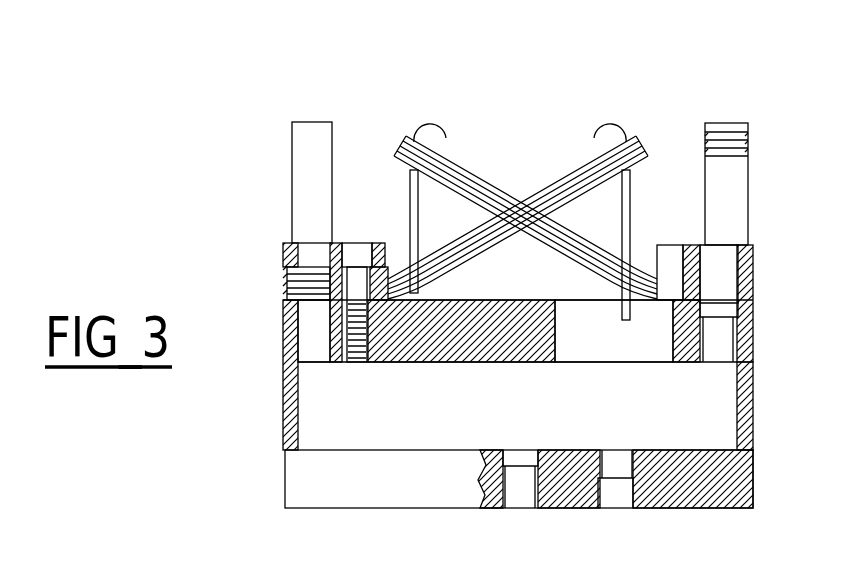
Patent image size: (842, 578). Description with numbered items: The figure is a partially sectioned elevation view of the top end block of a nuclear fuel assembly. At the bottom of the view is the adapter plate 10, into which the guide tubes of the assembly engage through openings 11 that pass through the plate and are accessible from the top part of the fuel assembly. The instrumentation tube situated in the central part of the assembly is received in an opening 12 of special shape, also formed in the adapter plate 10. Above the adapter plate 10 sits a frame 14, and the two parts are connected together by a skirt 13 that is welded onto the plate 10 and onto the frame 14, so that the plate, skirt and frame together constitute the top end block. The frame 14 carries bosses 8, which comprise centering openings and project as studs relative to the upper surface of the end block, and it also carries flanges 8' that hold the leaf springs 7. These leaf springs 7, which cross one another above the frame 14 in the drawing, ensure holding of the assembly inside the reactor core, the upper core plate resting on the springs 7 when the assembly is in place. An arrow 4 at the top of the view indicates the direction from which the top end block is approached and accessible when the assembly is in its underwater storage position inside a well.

The insertion direction arrow 4 is at (437, 92).
The leaf springs 7 is at (415, 128).
The bosses 8 is at (755, 203).
The flanges 8' is at (280, 211).
The adapter plate 10 is at (753, 480).
The openings 11 is at (614, 485).
The opening 12 is at (520, 490).
The skirt 13 is at (285, 420).
The frame 14 is at (755, 335).